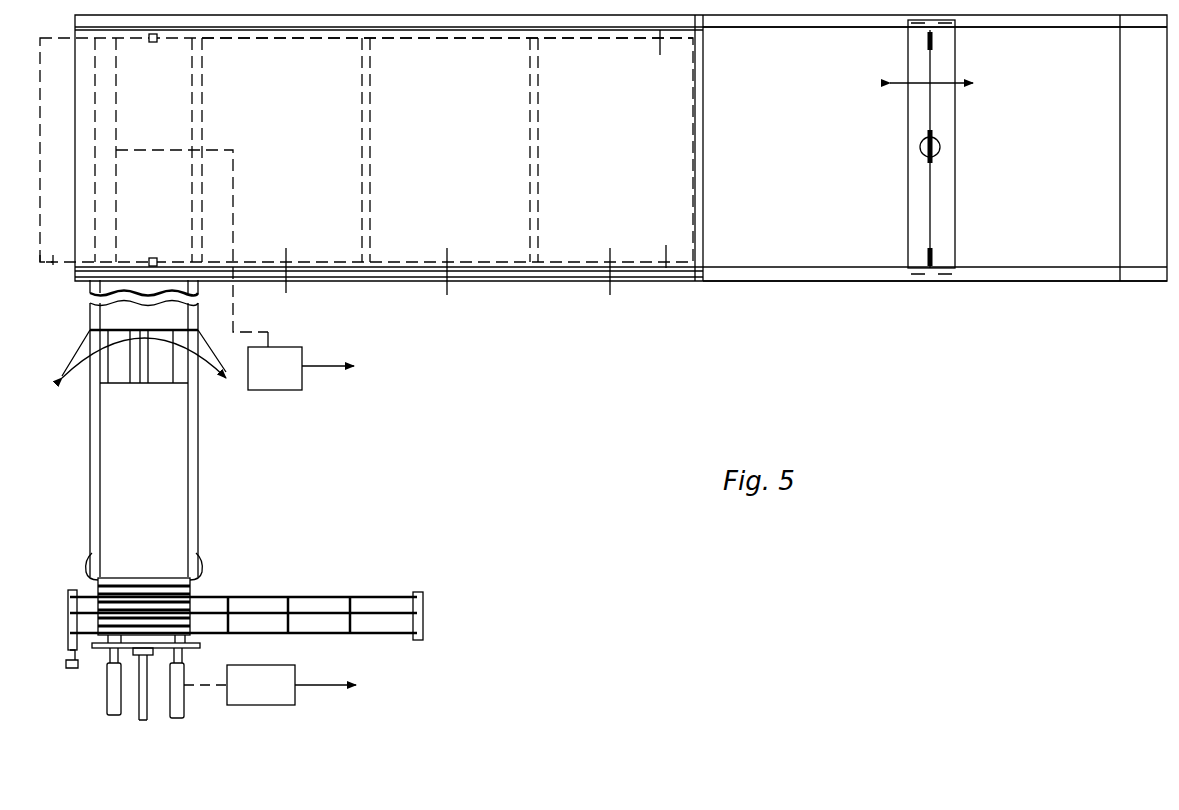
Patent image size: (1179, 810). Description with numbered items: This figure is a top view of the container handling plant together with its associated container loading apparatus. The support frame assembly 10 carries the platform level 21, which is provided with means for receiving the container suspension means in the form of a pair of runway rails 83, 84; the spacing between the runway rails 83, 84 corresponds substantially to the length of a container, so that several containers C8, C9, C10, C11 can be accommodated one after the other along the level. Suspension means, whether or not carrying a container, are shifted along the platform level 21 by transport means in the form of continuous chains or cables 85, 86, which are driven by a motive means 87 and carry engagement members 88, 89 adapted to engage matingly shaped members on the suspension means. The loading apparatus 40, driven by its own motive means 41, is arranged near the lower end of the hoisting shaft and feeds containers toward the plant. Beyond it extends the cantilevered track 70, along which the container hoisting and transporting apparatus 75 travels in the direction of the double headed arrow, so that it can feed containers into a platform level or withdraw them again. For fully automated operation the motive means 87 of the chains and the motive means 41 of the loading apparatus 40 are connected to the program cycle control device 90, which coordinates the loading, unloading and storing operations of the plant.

The support frame assembly 10 is at (573, 283).
The platform level 21 is at (669, 290).
The container loading apparatus 40 is at (206, 474).
The motive means for the container loading apparatus 41 is at (285, 676).
The cantilevered track 70 is at (851, 279).
The container hoisting and transporting apparatus 75 is at (901, 167).
The runway rail 83 is at (660, 58).
The runway rail 84 is at (666, 243).
The continuous chain or cable 85 is at (255, 38).
The continuous chain or cable 86 is at (257, 262).
The motive means 87 is at (288, 383).
The engagement member 88 is at (153, 42).
The engagement member 89 is at (153, 258).
The program cycle control device 90 is at (338, 529).
The container position C8 is at (52, 272).
The container position C9 is at (286, 286).
The container position C10 is at (443, 286).
The container position C11 is at (611, 286).